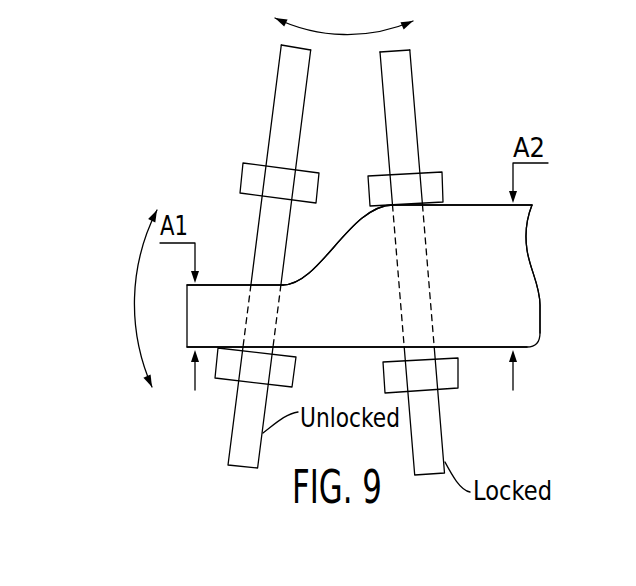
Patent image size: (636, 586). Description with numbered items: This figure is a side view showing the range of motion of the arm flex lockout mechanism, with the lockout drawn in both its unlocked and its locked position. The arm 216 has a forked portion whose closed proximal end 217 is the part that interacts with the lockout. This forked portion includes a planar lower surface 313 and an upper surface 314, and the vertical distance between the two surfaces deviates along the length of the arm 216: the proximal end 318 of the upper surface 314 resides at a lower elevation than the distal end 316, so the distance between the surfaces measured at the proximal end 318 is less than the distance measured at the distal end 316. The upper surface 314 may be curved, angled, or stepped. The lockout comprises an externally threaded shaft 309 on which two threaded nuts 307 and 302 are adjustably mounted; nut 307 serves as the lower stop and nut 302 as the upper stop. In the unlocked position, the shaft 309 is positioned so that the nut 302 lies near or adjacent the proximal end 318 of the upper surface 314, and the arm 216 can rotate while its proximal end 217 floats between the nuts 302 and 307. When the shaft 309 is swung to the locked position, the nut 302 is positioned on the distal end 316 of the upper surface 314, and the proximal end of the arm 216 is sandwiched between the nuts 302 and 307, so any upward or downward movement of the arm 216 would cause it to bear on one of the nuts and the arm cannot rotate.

The proximal end 217 is at (187, 310).
The arm 216 is at (518, 280).
The upper surface 314 is at (338, 245).
The distal end 316 is at (465, 203).
The proximal end 318 is at (213, 280).
The lower surface 313 is at (525, 350).
The shaft 309 is at (288, 78).
The nut 302 is at (372, 177).
The nut 307 is at (230, 380).